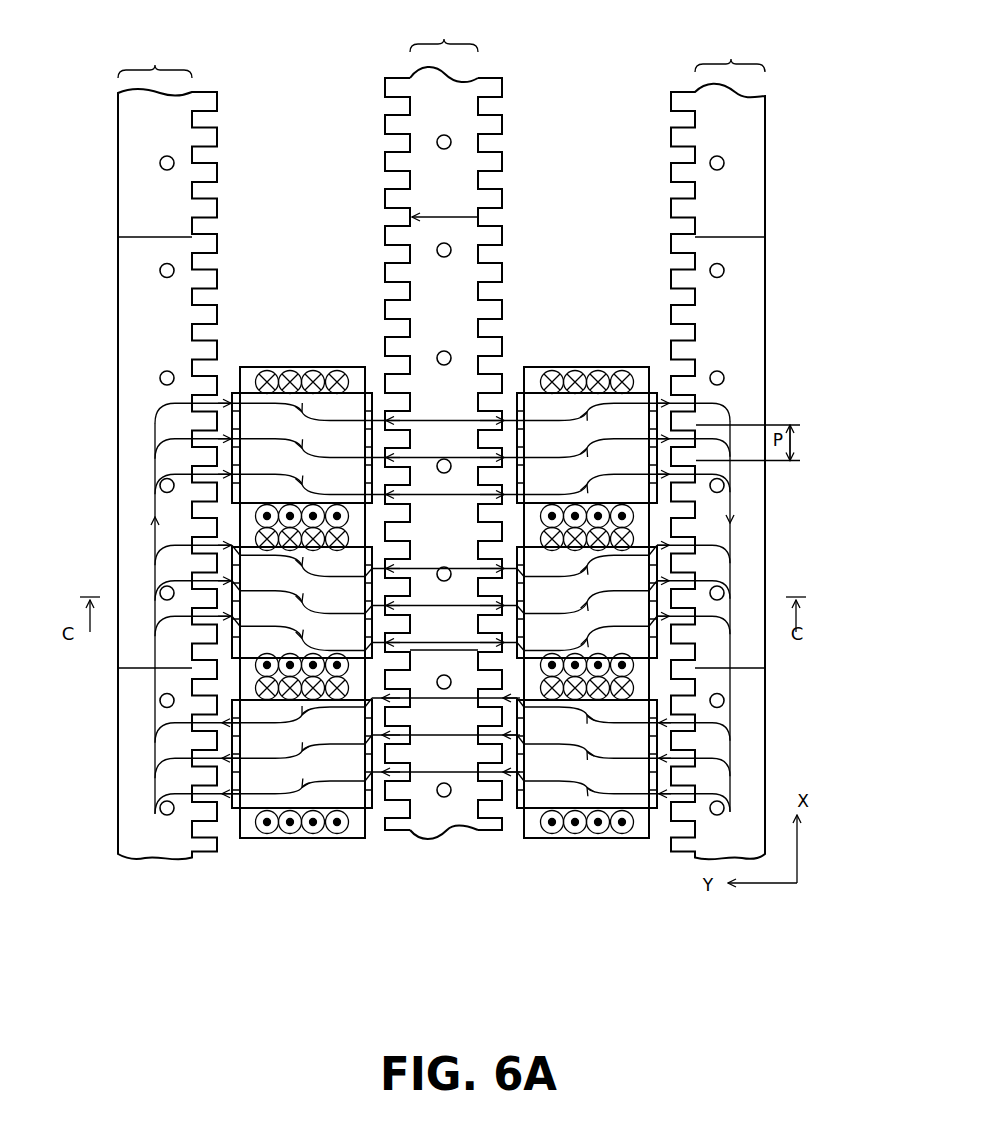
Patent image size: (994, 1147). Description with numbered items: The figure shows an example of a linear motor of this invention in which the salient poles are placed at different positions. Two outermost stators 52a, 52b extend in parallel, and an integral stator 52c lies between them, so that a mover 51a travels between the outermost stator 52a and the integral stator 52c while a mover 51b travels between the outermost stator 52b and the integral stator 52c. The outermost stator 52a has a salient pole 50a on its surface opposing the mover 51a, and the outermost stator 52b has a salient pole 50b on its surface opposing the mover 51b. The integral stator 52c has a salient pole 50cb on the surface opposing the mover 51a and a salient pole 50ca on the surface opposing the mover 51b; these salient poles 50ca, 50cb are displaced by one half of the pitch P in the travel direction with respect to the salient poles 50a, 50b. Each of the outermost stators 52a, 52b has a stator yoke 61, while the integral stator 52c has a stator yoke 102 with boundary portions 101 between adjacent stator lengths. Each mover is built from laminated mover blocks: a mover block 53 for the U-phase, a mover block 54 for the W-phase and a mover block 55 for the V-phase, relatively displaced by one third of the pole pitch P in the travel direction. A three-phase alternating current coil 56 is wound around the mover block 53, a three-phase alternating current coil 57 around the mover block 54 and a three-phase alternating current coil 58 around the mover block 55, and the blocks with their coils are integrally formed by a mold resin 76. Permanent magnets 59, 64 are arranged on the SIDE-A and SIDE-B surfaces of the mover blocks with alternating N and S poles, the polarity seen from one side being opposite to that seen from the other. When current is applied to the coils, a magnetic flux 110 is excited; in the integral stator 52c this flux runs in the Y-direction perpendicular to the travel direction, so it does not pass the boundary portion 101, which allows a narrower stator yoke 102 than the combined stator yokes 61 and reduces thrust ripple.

The stator yoke 61 is at (441, 53).
The stator yoke 102 is at (444, 29).
The salient pole 50b is at (217, 125).
The salient pole 50a is at (671, 124).
The salient pole 50ca is at (385, 150).
The salient pole 50cb is at (502, 150).
The boundary portion 101 is at (765, 218).
The mover 51b is at (315, 366).
The mover 51a is at (600, 366).
The permanent magnet 59 is at (372, 418).
The mold resin 76 is at (517, 416).
The mover block 55 is at (620, 423).
The mover block 54 is at (625, 577).
The three-phase alternating current coil 58 is at (620, 518).
The three-phase alternating current coil 57 is at (625, 688).
The three-phase alternating current coil 56 is at (590, 838).
The mover block 53 is at (530, 784).
The permanent magnet 64 is at (168, 558).
The magnetic flux 110 is at (160, 720).
The outermost stator 52b is at (140, 488).
The outermost stator 52a is at (745, 376).
The integral stator 52c is at (438, 652).